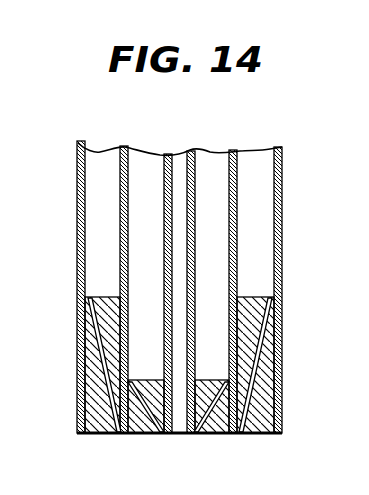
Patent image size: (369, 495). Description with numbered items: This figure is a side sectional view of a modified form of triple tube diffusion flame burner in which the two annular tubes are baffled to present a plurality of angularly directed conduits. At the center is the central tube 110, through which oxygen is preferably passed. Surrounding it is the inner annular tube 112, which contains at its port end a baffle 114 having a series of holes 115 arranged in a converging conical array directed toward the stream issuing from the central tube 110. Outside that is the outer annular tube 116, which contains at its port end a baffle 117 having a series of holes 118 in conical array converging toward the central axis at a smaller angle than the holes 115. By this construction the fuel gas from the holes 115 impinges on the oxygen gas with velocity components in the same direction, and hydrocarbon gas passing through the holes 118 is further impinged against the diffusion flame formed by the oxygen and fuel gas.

The central tube 110 is at (194, 236).
The inner annular tube 112 is at (237, 248).
The baffle 114 is at (228, 434).
The holes 115 is at (197, 434).
The outer annular tube 116 is at (281, 193).
The baffle 117 is at (95, 434).
The holes 118 is at (90, 336).